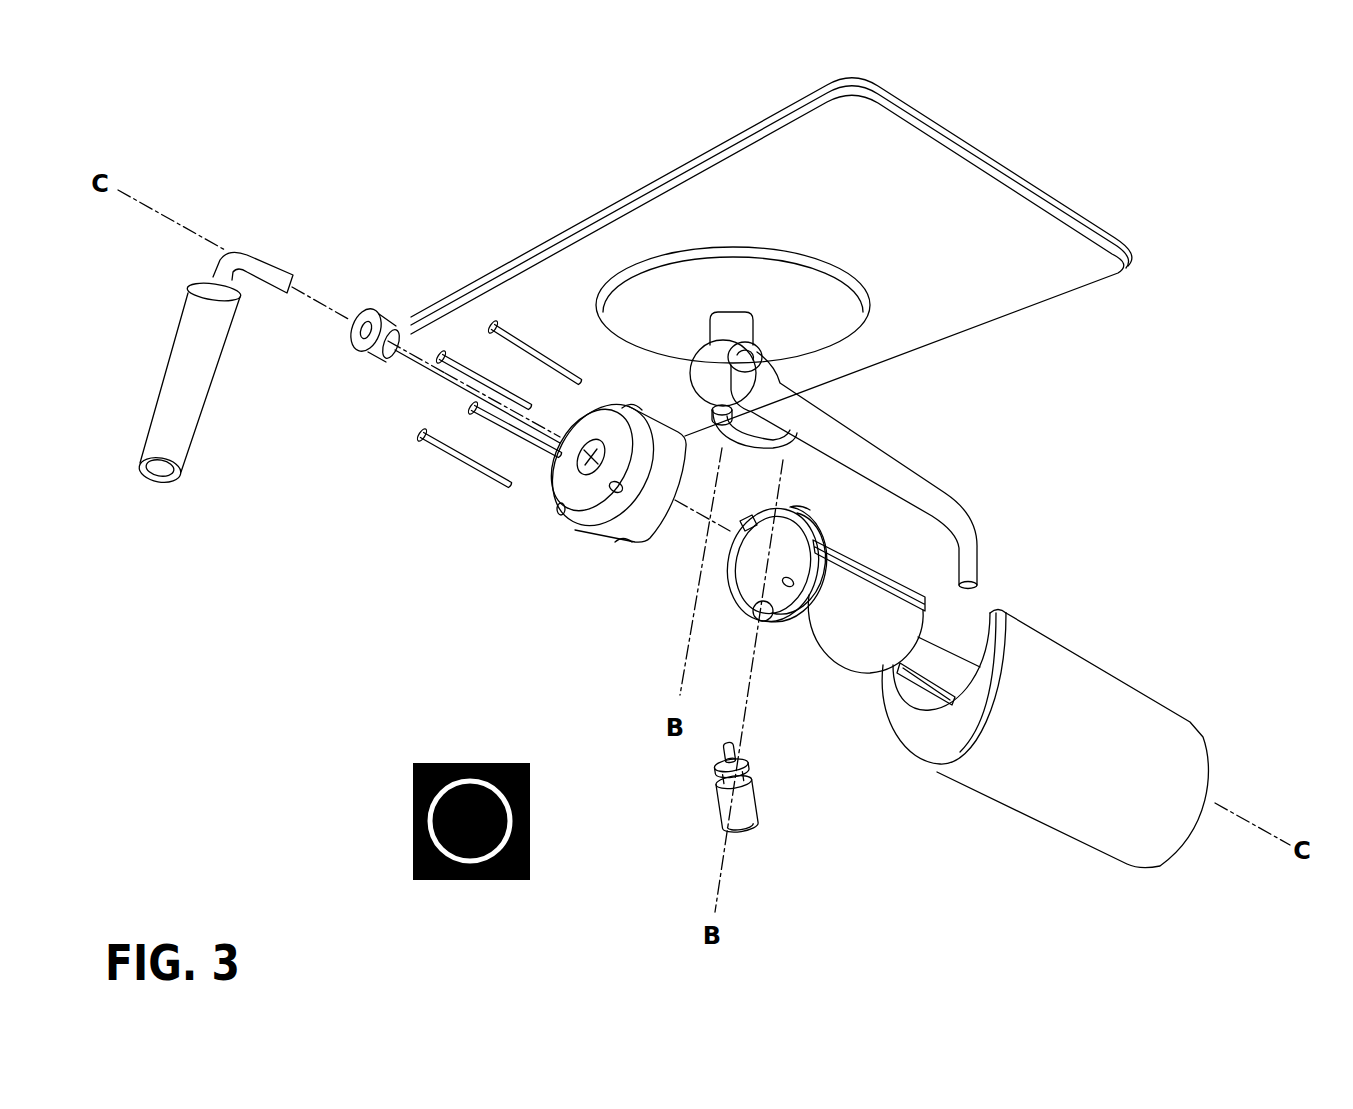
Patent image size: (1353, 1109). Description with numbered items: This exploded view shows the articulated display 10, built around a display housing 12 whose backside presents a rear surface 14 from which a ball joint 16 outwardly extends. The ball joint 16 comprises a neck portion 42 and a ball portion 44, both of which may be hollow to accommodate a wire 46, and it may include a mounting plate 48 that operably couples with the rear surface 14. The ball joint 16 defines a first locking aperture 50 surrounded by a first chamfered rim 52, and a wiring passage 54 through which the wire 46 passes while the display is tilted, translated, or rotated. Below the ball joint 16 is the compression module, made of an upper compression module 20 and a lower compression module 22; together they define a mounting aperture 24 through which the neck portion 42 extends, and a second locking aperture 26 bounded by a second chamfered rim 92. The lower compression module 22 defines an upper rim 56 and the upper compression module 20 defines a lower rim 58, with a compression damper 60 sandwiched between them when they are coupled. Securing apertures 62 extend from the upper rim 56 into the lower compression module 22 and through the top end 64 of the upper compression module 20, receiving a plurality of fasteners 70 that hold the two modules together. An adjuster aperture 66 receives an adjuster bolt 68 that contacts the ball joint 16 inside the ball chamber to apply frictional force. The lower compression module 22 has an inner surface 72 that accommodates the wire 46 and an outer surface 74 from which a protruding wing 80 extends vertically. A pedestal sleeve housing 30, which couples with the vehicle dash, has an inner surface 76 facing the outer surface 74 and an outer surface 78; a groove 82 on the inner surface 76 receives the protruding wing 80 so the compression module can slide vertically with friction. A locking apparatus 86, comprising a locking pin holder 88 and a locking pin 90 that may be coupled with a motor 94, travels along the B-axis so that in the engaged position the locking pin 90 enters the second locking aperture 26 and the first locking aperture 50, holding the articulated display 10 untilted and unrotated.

The articulated display 10 is at (422, 648).
The display housing 12 is at (998, 165).
The rear surface 14 is at (856, 209).
The ball joint 16 is at (793, 382).
The upper compression module 20 is at (605, 525).
The lower compression module 22 is at (857, 653).
The mounting aperture 24 is at (770, 528).
The second locking aperture 26 is at (620, 540).
The pedestal sleeve housing 30 is at (1136, 716).
The neck portion 42 is at (745, 328).
The ball portion 44 is at (707, 367).
The wire 46 is at (958, 497).
The mounting plate 48 is at (745, 275).
The first locking aperture 50 is at (733, 413).
The first chamfered rim 52 is at (775, 447).
The wiring passage 54 is at (757, 363).
The upper rim 56 is at (818, 531).
The lower rim 58 is at (660, 527).
The compression damper 60 is at (812, 521).
The securing apertures 62 is at (580, 527).
The top end 64 is at (562, 478).
The adjuster aperture 66 is at (595, 440).
The adjuster bolt 68 is at (368, 322).
The fasteners 70 is at (441, 352).
The inner surface 72 is at (728, 578).
The outer surface 74 is at (835, 624).
The inner surface 76 is at (940, 662).
The outer surface 78 is at (1058, 737).
The protruding wing 80 is at (977, 546).
The groove 82 is at (915, 668).
The locking apparatus 86 is at (709, 806).
The locking pin holder 88 is at (738, 802).
The locking pin 90 is at (742, 757).
The second chamfered rim 92 is at (620, 545).
The motor 94 is at (388, 828).